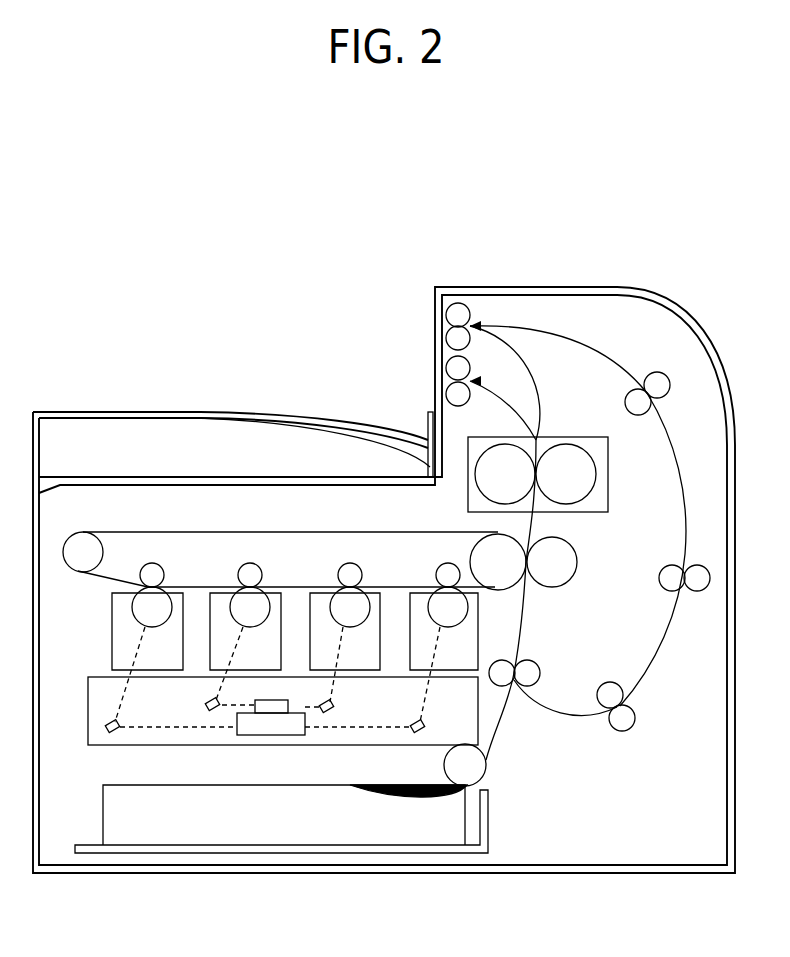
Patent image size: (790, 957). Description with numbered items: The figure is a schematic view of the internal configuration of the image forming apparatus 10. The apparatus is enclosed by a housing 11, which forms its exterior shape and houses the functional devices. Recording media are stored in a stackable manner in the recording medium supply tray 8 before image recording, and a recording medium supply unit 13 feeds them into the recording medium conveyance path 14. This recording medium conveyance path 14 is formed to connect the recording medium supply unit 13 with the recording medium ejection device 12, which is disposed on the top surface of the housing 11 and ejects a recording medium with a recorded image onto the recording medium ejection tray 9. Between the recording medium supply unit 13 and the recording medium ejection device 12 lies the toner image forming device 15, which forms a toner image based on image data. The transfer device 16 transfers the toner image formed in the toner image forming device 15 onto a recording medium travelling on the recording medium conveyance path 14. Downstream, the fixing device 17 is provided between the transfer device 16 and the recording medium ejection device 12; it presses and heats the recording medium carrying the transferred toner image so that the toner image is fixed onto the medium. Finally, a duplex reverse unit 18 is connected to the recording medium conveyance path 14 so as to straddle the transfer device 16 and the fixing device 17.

The recording medium supply tray 8 is at (330, 832).
The recording medium ejection tray 9 is at (245, 410).
The image forming apparatus 10 is at (71, 244).
The housing 11 is at (631, 294).
The recording medium ejection device 12 is at (431, 381).
The recording medium supply unit 13 is at (500, 773).
The recording medium conveyance path 14 is at (521, 736).
The toner image forming device 15 is at (296, 520).
The transfer device 16 is at (531, 585).
The fixing device 17 is at (541, 445).
The duplex reverse unit 18 is at (674, 499).